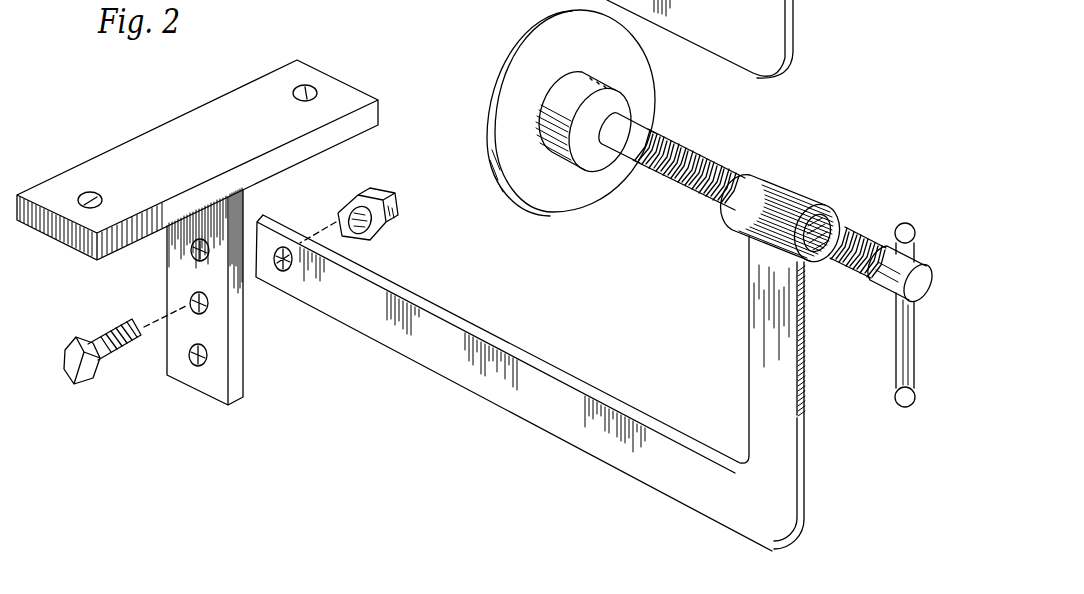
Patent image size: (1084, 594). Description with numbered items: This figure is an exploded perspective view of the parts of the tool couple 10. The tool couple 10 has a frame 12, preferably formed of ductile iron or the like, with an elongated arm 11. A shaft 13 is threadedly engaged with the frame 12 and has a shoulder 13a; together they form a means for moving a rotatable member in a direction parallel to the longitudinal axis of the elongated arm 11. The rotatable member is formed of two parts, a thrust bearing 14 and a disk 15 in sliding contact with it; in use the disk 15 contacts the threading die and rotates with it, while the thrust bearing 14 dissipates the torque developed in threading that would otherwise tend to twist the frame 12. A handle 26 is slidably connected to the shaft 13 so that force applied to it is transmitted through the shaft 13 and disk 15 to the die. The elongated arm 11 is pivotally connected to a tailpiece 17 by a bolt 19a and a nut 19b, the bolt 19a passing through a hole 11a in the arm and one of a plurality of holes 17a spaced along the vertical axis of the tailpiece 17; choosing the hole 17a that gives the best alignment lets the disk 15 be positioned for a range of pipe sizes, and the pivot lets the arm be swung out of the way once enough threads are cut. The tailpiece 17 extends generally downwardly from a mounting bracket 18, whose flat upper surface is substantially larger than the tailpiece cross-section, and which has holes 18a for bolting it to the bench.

The tool couple 10 is at (847, 455).
The elongated arm 11 is at (548, 380).
The hole 11a is at (280, 246).
The frame 12 is at (790, 468).
The shaft 13 is at (847, 228).
The shoulder 13a is at (625, 128).
The thrust bearing 14 is at (595, 158).
The disk 15 is at (590, 58).
The tailpiece 17 is at (221, 383).
The hole 17a is at (192, 262).
The mounting bracket 18 is at (63, 230).
The holes 18a is at (88, 193).
The bolt 19a is at (76, 368).
The nut 19b is at (374, 232).
The handle 26 is at (902, 332).